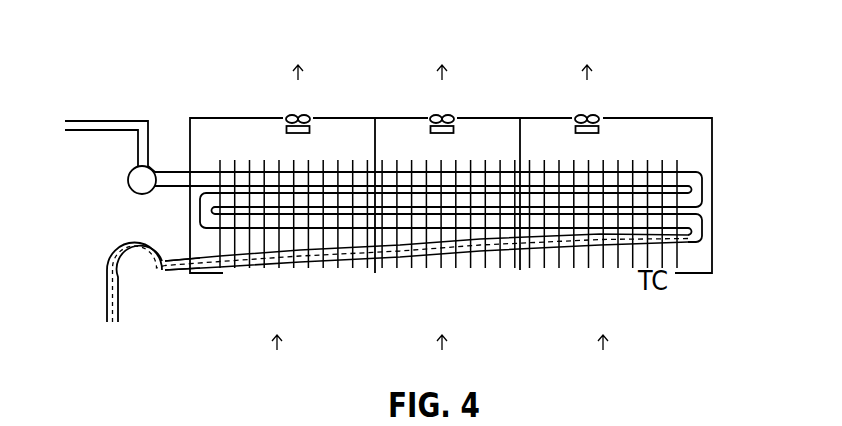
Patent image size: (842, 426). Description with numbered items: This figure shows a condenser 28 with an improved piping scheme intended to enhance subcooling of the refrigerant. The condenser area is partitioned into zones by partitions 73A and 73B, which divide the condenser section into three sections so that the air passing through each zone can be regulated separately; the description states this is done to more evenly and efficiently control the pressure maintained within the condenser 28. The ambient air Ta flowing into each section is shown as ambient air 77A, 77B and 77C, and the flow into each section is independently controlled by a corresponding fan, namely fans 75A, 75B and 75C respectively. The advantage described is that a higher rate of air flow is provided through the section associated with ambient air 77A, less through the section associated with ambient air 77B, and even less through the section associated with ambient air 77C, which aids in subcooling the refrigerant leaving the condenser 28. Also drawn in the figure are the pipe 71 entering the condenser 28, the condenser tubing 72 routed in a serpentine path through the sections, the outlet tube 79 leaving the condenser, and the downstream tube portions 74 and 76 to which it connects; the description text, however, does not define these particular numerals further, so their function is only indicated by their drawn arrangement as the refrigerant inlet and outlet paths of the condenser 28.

The condenser 28 is at (243, 114).
The refrigerant inlet pipe 71 is at (120, 121).
The condenser tube 72 is at (703, 187).
The partition 73A is at (375, 273).
The partition 73B is at (520, 270).
The tube junction 74 is at (173, 256).
The fan 75A is at (309, 129).
The fan 75B is at (455, 129).
The fan 75C is at (600, 130).
The tube bend 76 is at (140, 239).
The ambient air section 77A is at (267, 330).
The ambient air section 77B is at (432, 330).
The ambient air section 77C is at (593, 330).
The capillary outlet tube 79 is at (663, 243).